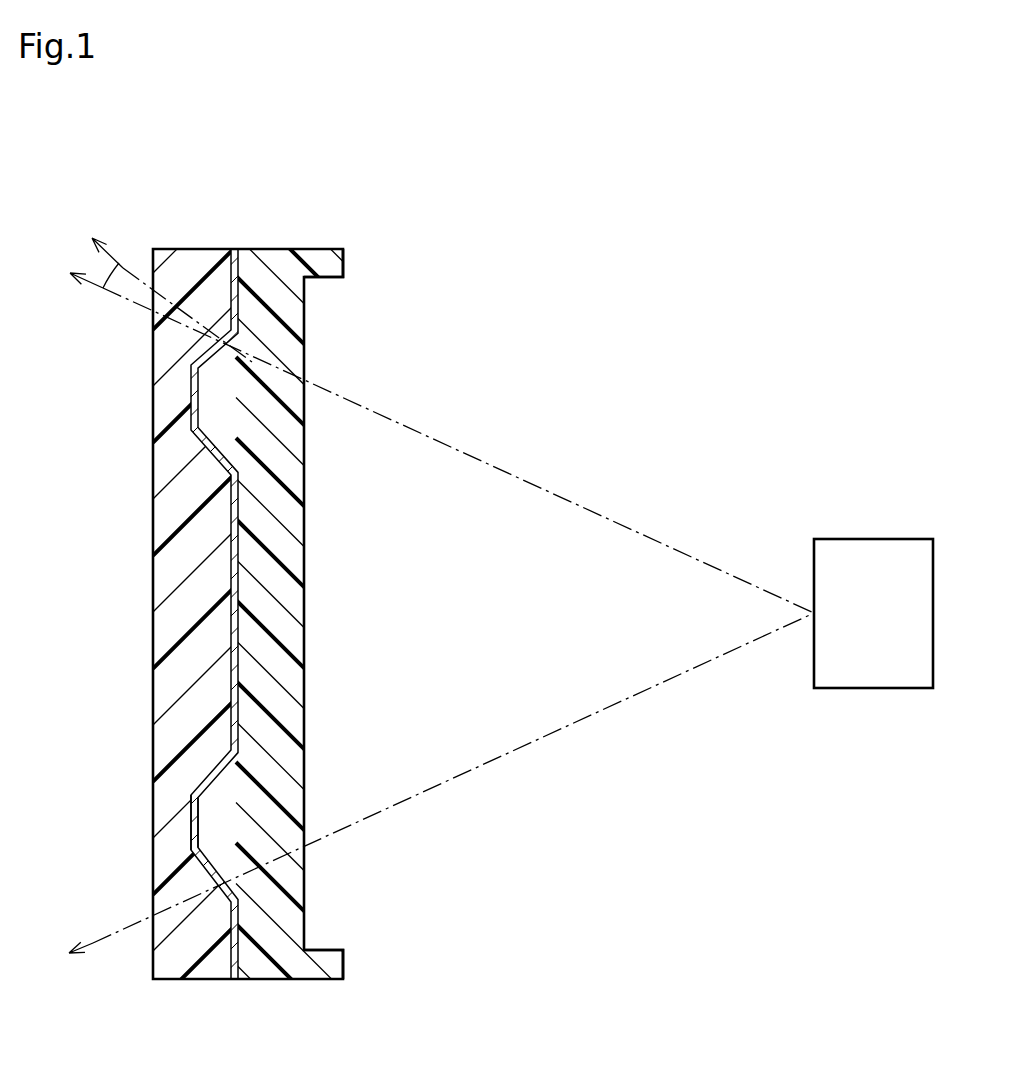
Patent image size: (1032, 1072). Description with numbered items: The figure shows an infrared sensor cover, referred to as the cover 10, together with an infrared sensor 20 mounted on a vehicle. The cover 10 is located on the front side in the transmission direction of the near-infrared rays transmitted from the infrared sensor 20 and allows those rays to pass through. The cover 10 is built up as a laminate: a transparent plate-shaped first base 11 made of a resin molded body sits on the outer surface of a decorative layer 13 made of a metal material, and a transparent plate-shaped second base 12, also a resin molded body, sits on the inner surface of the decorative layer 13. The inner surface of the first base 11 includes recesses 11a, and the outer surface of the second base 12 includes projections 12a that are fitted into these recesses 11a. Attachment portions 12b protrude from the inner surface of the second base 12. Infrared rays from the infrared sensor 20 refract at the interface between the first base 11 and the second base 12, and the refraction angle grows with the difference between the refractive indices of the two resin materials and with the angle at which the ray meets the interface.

The cover 10 is at (44, 303).
The first base 11 is at (153, 966).
The recesses 11a is at (193, 846).
The second base 12 is at (272, 979).
The projections 12a is at (198, 819).
The attachment portions 12b is at (343, 262).
The decorative layer 13 is at (235, 979).
The infrared sensor 20 is at (872, 539).